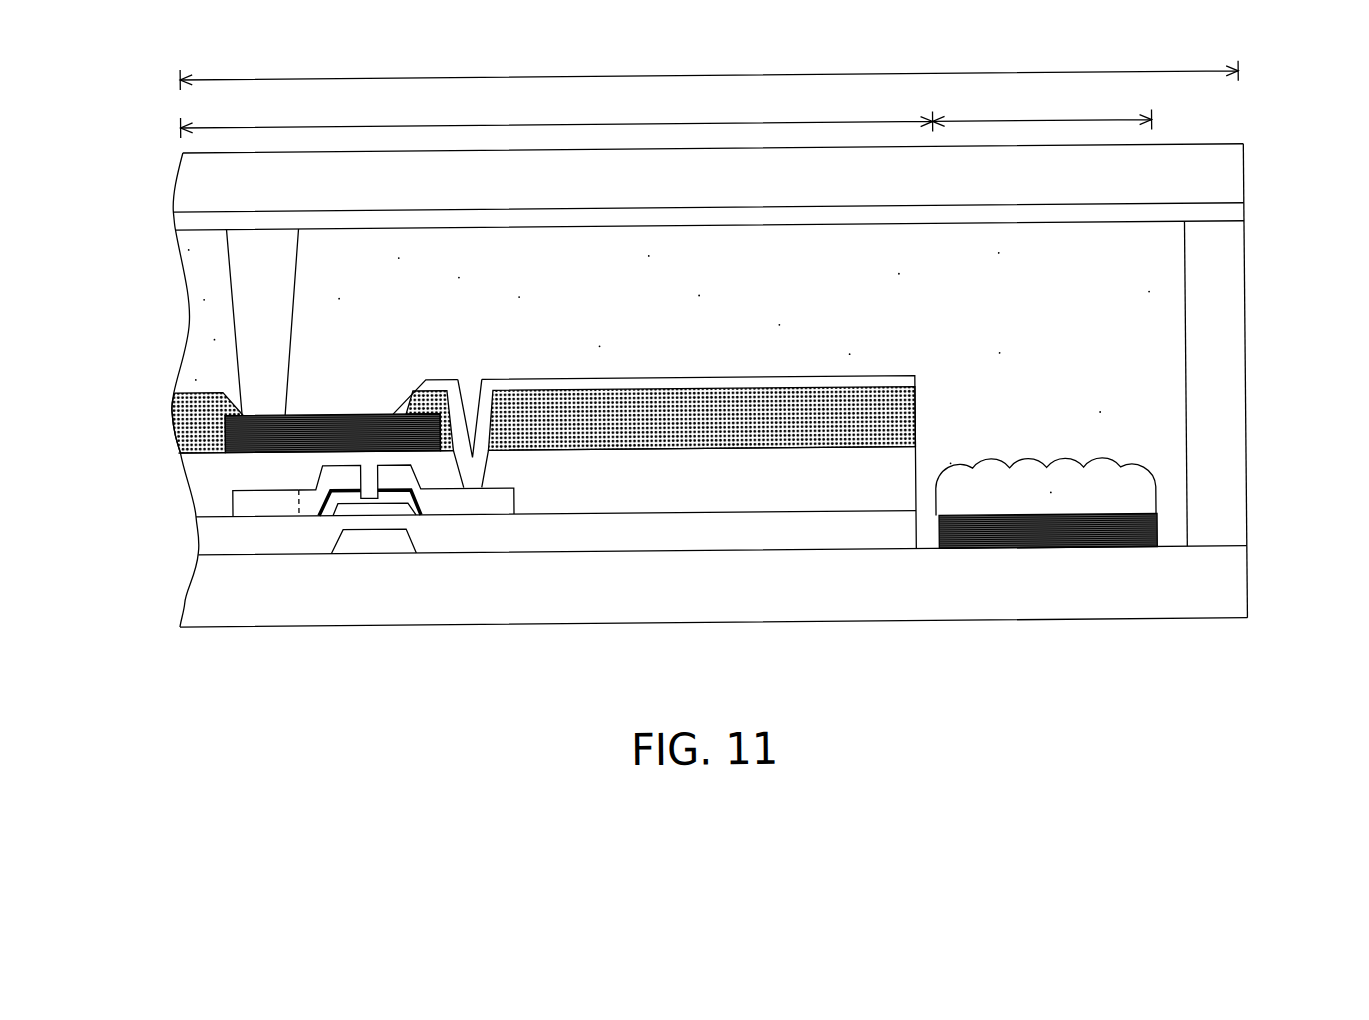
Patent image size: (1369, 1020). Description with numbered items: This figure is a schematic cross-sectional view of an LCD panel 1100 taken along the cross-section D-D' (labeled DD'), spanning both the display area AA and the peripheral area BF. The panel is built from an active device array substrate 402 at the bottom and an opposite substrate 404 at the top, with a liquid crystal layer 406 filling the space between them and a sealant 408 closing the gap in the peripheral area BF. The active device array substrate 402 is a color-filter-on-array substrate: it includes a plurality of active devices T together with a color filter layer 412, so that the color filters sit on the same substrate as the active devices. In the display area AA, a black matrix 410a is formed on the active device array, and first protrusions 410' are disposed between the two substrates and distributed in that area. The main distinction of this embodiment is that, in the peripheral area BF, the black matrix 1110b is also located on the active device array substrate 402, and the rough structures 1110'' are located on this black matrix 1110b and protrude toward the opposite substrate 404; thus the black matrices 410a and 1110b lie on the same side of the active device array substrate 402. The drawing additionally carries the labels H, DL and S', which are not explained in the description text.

The LCD panel 1100 is at (1250, 679).
The opposite substrate 404 is at (150, 153).
The active device array substrate 402 is at (150, 383).
The liquid crystal layer 406 is at (208, 276).
The first protrusions 410' is at (199, 323).
The color filter layer 412 is at (603, 405).
The black matrix 410a is at (357, 416).
The contact hole H is at (471, 392).
The active devices T is at (312, 474).
The data line DL is at (247, 508).
The rough structure 1110'' is at (1129, 485).
The black matrix 1110b is at (1130, 540).
The sealant 408 is at (1230, 377).
The space S' is at (1191, 313).
The cross-section D-D' DD' is at (709, 61).
The display area AA is at (556, 111).
The peripheral area BF is at (1041, 107).